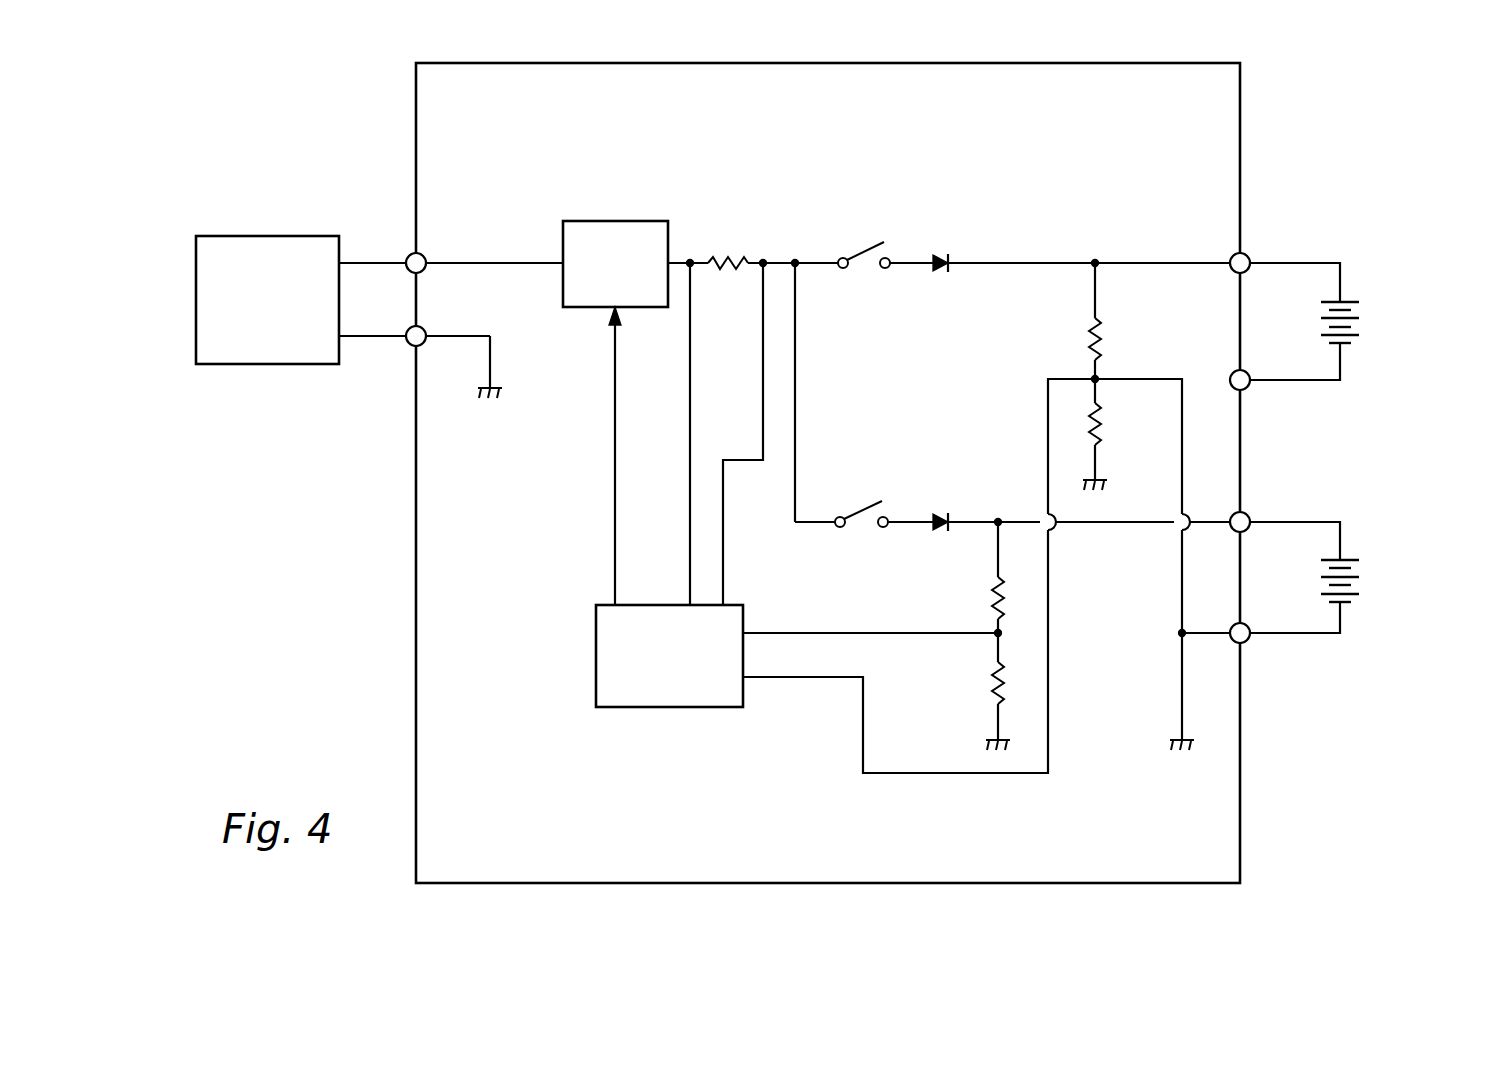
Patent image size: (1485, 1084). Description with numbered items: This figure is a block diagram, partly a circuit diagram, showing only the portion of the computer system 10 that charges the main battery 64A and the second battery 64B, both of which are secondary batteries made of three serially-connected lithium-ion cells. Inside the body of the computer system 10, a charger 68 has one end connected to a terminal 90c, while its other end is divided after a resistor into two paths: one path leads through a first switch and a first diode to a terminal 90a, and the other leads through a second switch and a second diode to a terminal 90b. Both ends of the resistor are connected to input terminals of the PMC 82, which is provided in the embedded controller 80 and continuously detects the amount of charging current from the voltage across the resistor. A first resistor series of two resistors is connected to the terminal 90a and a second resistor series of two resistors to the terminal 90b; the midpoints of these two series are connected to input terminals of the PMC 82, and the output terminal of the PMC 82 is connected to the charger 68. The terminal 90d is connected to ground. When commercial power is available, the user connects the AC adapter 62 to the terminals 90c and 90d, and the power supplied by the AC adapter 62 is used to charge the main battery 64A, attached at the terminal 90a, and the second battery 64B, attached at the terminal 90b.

The computer system 10 is at (1240, 162).
The AC adapter 62 is at (276, 236).
The charger 68 is at (626, 221).
The embedded controller 80 is at (540, 548).
The PMC 82 is at (686, 707).
The terminal 90a is at (1248, 256).
The terminal 90b is at (1248, 515).
The terminal 90c is at (424, 256).
The terminal 90d is at (424, 329).
The main battery 64A is at (1348, 300).
The second battery 64B is at (1348, 558).